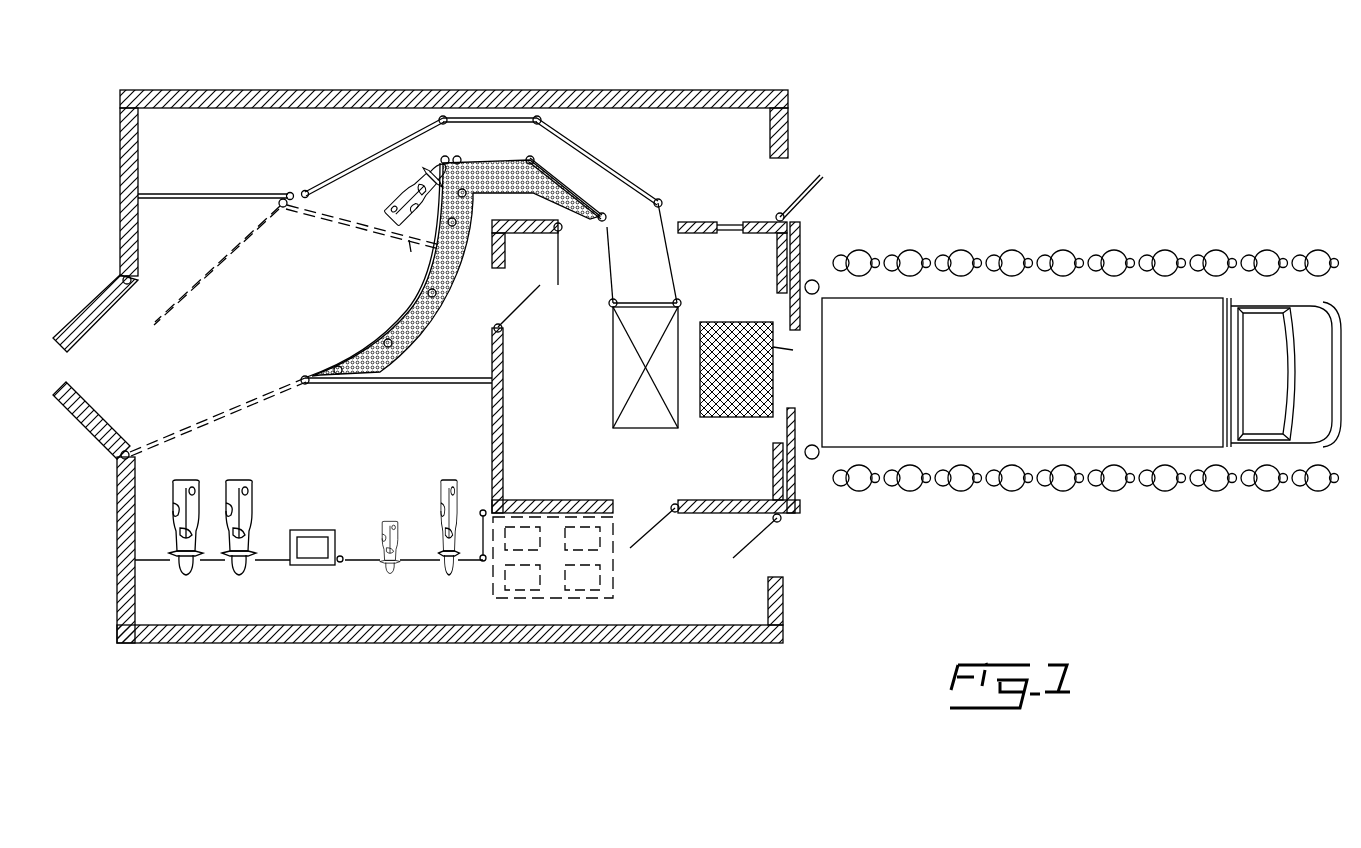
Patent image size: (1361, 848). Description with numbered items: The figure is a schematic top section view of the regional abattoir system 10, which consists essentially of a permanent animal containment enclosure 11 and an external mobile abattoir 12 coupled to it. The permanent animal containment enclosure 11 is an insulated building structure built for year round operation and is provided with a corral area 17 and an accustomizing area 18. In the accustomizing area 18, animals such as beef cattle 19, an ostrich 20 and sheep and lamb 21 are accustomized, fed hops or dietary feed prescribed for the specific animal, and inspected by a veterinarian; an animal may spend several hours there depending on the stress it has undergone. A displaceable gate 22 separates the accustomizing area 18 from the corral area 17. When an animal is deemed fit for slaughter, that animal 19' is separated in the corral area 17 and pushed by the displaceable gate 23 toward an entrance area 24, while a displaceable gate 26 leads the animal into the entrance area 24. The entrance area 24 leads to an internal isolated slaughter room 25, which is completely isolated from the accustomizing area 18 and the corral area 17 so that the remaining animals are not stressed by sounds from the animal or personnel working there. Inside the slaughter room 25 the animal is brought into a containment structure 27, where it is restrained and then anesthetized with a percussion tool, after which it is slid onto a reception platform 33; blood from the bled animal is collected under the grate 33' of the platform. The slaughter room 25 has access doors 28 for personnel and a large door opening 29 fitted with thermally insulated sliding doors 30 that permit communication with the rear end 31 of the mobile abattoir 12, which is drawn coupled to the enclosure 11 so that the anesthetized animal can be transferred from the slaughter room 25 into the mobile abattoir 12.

The regional abattoir system 10 is at (878, 184).
The permanent animal containment enclosure 11 is at (248, 650).
The external mobile abattoir 12 is at (985, 424).
The corral area 17 is at (290, 283).
The accustomizing area 18 is at (330, 505).
The beef cattle 19 is at (213, 500).
The animal deemed fit for slaughter 19' is at (380, 174).
The ostrich 20 is at (450, 483).
The sheep and lamb 21 is at (390, 522).
The displaceable gate 22 is at (254, 404).
The displaceable gate 23 is at (399, 257).
The entrance area 24 is at (490, 140).
The internal isolated slaughter room 25 is at (492, 362).
The displaceable gate 26 is at (433, 113).
The containment structure 27 is at (605, 388).
The access doors 28 is at (530, 305).
The large door opening 29 is at (790, 320).
The thermally insulated sliding doors 30 is at (790, 283).
The rear end of the mobile abattoir 31 is at (823, 440).
The reception platform 33 is at (733, 489).
The grate of the platform 33' is at (726, 410).